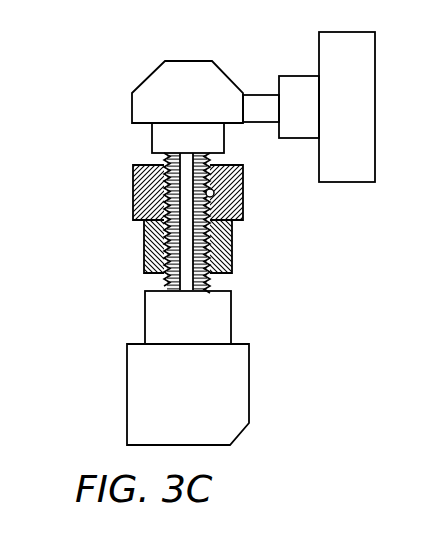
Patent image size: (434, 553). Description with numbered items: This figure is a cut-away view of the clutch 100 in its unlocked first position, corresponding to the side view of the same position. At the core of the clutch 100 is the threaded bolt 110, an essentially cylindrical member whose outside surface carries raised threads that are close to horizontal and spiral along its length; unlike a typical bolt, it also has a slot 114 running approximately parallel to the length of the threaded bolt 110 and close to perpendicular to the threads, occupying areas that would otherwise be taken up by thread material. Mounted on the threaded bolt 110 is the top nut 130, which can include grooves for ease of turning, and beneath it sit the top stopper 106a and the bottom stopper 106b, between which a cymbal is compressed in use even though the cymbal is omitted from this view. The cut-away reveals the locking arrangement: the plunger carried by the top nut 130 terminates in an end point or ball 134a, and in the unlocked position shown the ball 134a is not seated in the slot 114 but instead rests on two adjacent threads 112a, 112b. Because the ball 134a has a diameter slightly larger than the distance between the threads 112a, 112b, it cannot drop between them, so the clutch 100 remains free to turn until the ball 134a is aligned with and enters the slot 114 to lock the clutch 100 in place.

The clutch 100 is at (133, 56).
The threaded bolt 110 is at (158, 160).
The top nut 130 is at (133, 178).
The thread 112a is at (160, 198).
The thread 112b is at (157, 213).
The ball 134a is at (210, 193).
The slot 114 is at (188, 278).
The top stopper 106a is at (143, 267).
The bottom stopper 106b is at (222, 310).